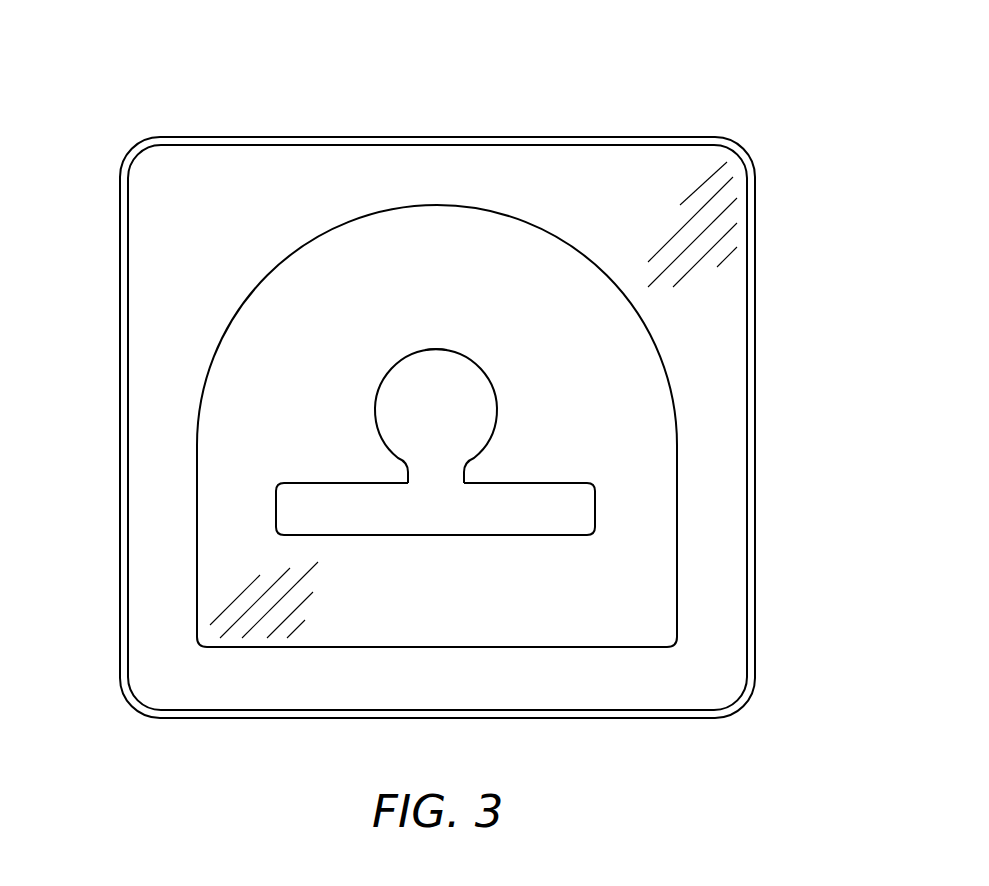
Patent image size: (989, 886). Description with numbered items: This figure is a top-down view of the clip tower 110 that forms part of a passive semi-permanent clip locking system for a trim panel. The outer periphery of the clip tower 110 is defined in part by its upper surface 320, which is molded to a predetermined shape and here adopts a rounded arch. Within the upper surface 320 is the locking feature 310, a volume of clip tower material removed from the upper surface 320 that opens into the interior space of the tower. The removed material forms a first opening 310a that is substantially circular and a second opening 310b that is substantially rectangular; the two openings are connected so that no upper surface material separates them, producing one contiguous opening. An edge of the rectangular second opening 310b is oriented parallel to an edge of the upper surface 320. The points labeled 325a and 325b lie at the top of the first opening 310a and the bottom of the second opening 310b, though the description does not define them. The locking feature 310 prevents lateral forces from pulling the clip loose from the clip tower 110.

The clip tower 110 is at (103, 84).
The locking feature 310 is at (558, 447).
The first opening 310a is at (497, 414).
The second opening 310b is at (595, 508).
The upper surface 320 is at (648, 365).
The first connection point 325a is at (435, 349).
The second connection point 325b is at (437, 535).